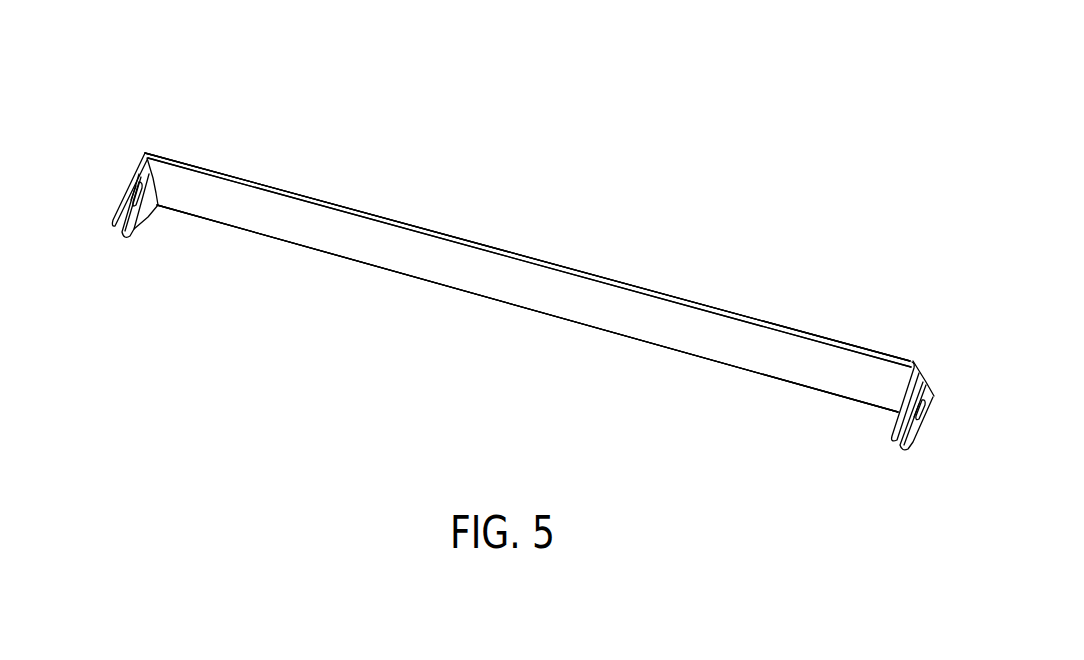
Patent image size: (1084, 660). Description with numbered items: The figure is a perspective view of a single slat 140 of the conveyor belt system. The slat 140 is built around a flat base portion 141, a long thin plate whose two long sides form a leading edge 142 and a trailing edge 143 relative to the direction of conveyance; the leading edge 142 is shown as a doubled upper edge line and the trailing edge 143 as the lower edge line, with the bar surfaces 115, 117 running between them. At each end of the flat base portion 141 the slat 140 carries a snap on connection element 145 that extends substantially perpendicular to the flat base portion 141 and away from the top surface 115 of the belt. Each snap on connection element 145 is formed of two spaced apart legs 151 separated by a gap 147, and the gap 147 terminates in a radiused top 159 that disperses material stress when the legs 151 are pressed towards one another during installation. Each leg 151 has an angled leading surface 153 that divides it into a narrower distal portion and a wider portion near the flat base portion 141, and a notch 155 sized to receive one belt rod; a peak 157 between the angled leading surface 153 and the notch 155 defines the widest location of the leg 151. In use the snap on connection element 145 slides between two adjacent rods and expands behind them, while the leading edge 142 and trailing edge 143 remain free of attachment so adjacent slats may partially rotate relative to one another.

The top surface 115 is at (610, 277).
The second edge 117 is at (662, 335).
The slat 140 is at (494, 303).
The flat base portion 141 is at (380, 257).
The leading edge 142 is at (387, 220).
The trailing edge 143 is at (275, 240).
The snap on connection element 145 is at (494, 303).
The gap 147 is at (112, 235).
The leg 151 is at (120, 185).
The angled leading surface 153 is at (115, 203).
The notch 155 is at (127, 177).
The peak 157 is at (127, 160).
The radiused top 159 is at (147, 173).